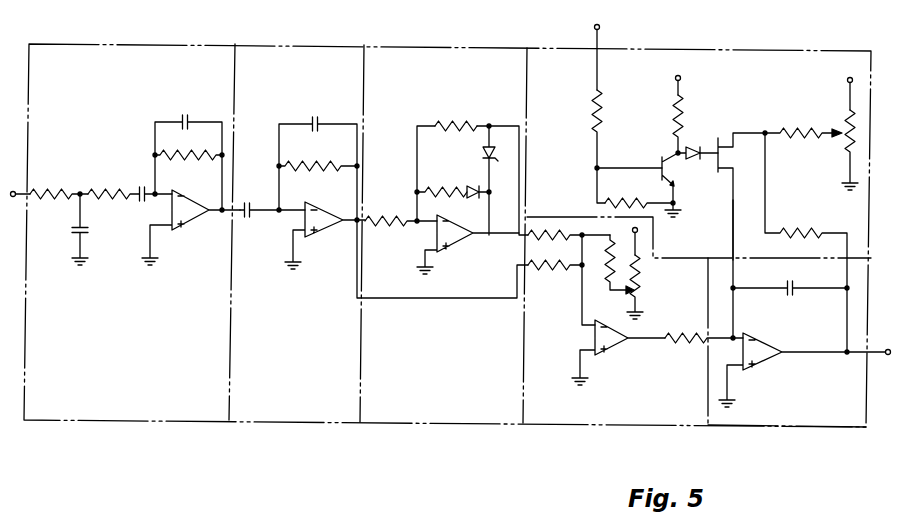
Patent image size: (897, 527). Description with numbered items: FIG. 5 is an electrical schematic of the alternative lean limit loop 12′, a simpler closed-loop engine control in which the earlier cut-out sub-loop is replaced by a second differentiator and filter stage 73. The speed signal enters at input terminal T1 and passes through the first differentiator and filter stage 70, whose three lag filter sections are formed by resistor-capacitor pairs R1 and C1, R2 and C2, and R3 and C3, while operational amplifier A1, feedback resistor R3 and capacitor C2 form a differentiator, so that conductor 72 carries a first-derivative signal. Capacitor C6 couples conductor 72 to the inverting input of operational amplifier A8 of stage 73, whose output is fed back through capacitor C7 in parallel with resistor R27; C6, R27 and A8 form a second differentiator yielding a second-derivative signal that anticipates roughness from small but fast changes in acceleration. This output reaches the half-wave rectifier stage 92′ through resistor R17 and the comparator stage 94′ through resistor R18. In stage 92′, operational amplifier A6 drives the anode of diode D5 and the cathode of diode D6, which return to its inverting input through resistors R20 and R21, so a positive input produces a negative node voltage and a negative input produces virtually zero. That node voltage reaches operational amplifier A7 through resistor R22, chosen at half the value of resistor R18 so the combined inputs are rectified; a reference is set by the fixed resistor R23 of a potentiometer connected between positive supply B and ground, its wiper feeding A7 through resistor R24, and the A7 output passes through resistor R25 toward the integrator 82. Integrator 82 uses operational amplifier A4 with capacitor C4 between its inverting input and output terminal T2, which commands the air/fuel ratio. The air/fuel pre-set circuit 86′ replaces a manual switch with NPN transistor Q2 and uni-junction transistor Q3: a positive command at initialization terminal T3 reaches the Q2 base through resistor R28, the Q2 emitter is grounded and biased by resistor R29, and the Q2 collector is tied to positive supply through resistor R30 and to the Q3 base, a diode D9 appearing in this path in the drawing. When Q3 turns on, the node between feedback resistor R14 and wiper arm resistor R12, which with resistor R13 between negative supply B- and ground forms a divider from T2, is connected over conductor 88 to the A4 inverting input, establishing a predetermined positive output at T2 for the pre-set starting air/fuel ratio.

The lean limit loop 12′ is at (476, 446).
The first differentiator and filter stage 70 is at (112, 52).
The second differentiator and filter stage 73 is at (280, 50).
The half-wave rectifier stage 92′ is at (432, 50).
The air/fuel pre-set circuit 86′ is at (735, 58).
The comparator stage 94′ is at (568, 410).
The integrator 82 is at (838, 427).
The conductor 72 is at (236, 214).
The conductor 88 is at (731, 208).
The differentiator input terminal T1 is at (18, 180).
The output terminal T2 is at (885, 339).
The initialization terminal T3 is at (613, 54).
The supply terminal B is at (625, 234).
The negative supply terminal B- is at (839, 83).
The resistor R1 is at (63, 190).
The resistor R2 is at (96, 190).
The feedback resistor R3 is at (183, 158).
The potentiometer wiper arm resistor R12 is at (792, 127).
The resistor R13 is at (841, 141).
The feedback resistor R14 is at (795, 232).
The resistor R17 is at (382, 216).
The resistor R18 is at (543, 270).
The resistor R20 is at (430, 188).
The resistor R21 is at (440, 122).
The resistor R22 is at (531, 232).
The fixed resistor R23 is at (612, 272).
The resistor R24 is at (638, 270).
The resistor R25 is at (682, 346).
The resistor R27 is at (303, 164).
The resistor R28 is at (606, 110).
The resistor R29 is at (618, 180).
The resistor R30 is at (684, 112).
The capacitor C1 is at (76, 240).
The capacitor C2 is at (140, 206).
The capacitor C3 is at (186, 113).
The capacitor C4 is at (794, 296).
The capacitor C6 is at (252, 216).
The capacitor C7 is at (317, 117).
The operational amplifier A1 is at (182, 228).
The operational amplifier A4 is at (762, 358).
The operational amplifier A6 is at (460, 238).
The operational amplifier A7 is at (609, 346).
The operational amplifier A8 is at (323, 182).
The diode D5 is at (478, 196).
The diode D6 is at (497, 162).
The diode D9 is at (690, 128).
The NPN transistor Q2 is at (660, 164).
The uni-junction transistor Q3 is at (720, 166).